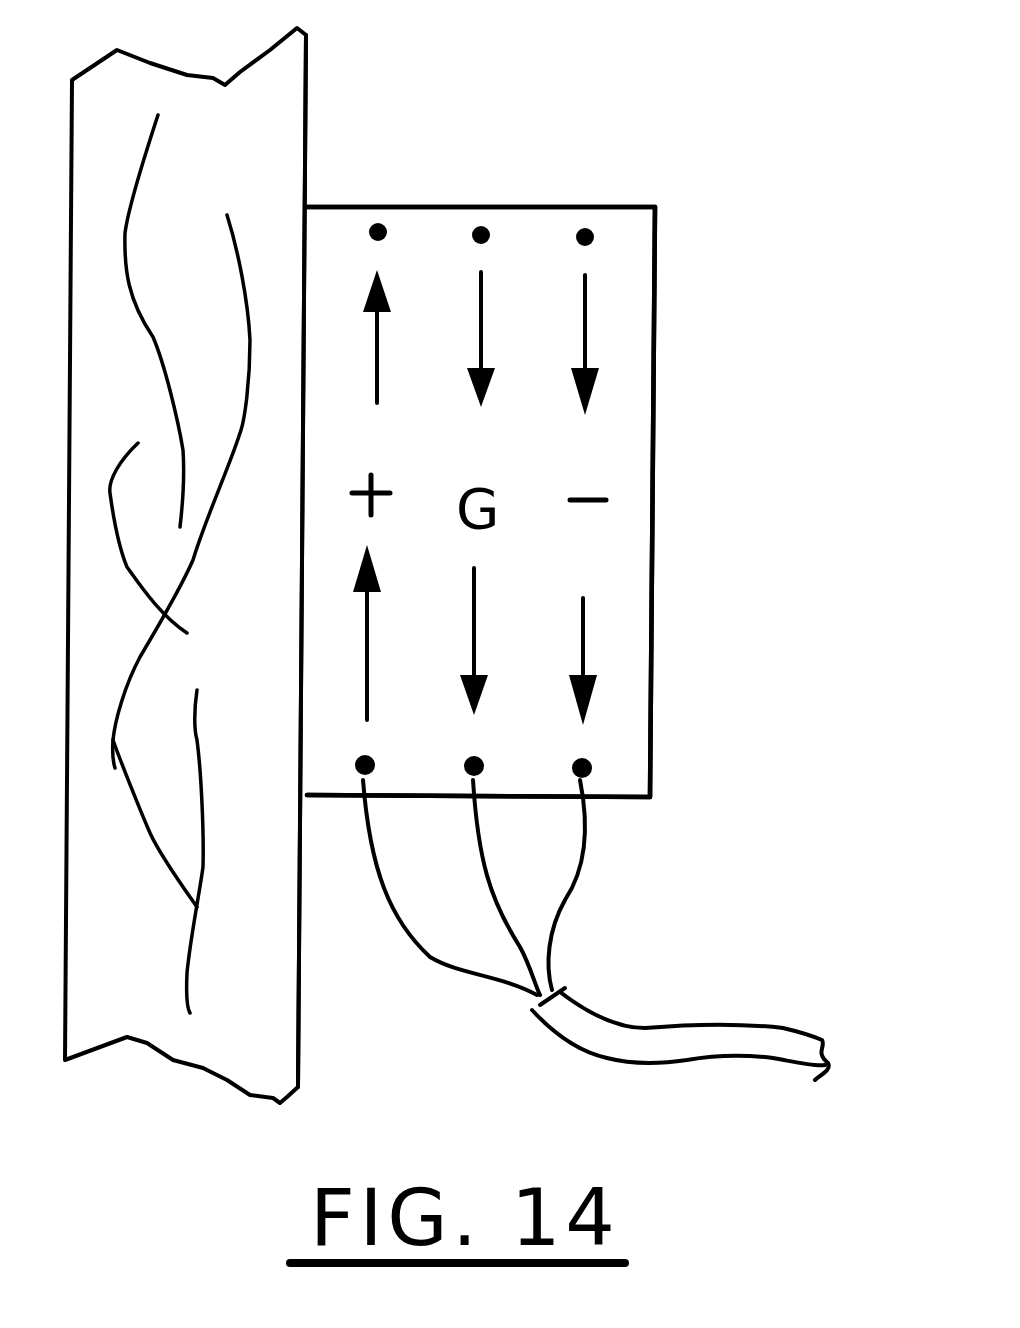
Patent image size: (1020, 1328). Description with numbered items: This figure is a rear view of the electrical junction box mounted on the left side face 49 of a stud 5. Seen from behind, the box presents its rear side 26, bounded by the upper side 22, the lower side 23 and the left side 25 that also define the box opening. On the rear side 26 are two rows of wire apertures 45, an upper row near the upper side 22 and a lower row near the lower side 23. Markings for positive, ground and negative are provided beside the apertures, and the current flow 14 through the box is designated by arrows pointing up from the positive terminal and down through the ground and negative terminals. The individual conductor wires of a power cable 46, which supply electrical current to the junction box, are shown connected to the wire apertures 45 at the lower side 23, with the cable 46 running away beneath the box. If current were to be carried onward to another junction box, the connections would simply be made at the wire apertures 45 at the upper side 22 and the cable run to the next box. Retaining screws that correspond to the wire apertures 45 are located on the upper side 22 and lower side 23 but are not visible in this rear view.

The stud 5 is at (310, 97).
The current flow 14 is at (592, 337).
The upper side 22 is at (533, 193).
The lower side 23 is at (623, 805).
The left side 25 is at (655, 460).
The rear side 26 is at (615, 563).
The wire apertures 45 is at (740, 690).
The power cable 46 is at (680, 1022).
The left side face 49 is at (303, 973).